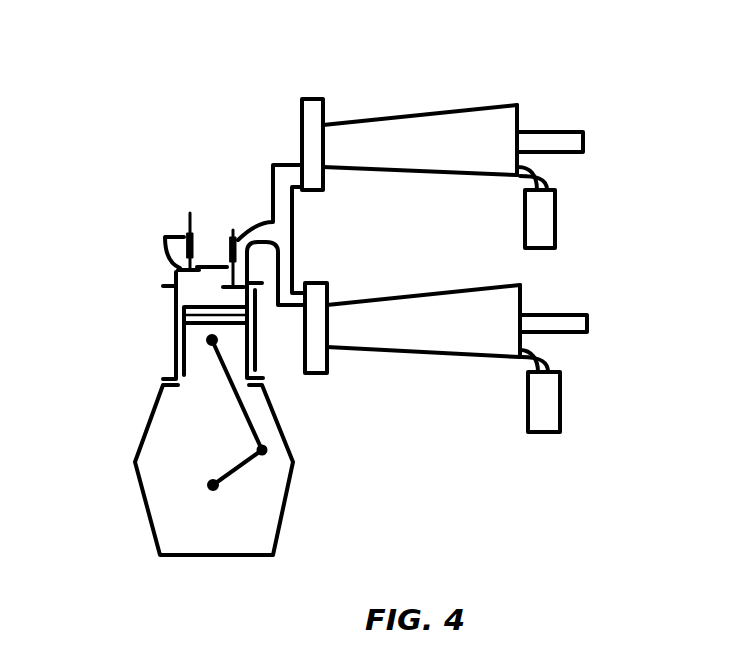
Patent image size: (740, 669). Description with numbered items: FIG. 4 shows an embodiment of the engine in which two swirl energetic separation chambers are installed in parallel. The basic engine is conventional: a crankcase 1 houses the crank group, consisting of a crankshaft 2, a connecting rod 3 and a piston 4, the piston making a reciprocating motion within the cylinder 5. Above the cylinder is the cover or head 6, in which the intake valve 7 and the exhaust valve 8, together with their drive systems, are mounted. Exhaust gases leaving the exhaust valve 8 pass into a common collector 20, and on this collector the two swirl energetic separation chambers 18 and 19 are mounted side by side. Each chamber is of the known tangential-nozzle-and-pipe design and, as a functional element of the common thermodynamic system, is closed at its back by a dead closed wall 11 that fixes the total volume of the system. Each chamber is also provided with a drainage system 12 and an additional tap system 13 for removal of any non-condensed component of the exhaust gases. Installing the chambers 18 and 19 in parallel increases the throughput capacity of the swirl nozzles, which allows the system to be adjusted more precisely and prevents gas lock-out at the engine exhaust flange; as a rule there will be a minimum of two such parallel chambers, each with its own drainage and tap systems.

The crankcase 1 is at (137, 443).
The crankshaft 2 is at (212, 484).
The connecting rod 3 is at (245, 417).
The piston 4 is at (185, 363).
The cylinder 5 is at (175, 324).
The cover (head) 6 is at (168, 271).
The intake valve 7 is at (186, 236).
The exhaust valve 8 is at (233, 236).
The dead closed wall 11 is at (518, 105).
The drainage system 12 is at (543, 218).
The tap system 13 is at (553, 140).
The swirl energetic separation chamber 18 is at (405, 133).
The swirl energetic separation chamber 19 is at (375, 335).
The common collector 20 is at (282, 165).